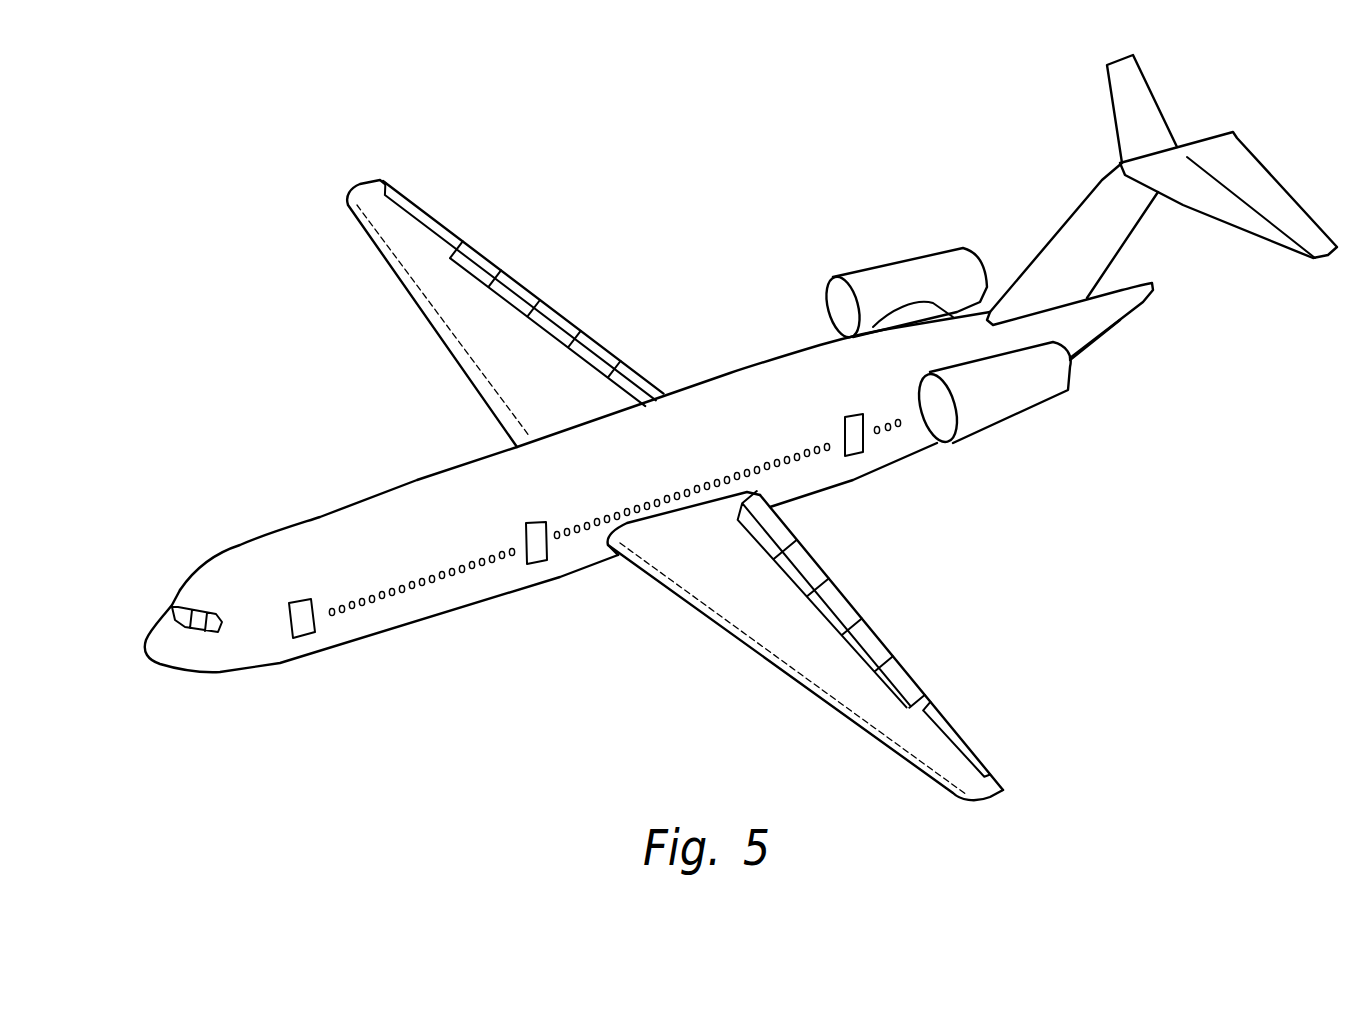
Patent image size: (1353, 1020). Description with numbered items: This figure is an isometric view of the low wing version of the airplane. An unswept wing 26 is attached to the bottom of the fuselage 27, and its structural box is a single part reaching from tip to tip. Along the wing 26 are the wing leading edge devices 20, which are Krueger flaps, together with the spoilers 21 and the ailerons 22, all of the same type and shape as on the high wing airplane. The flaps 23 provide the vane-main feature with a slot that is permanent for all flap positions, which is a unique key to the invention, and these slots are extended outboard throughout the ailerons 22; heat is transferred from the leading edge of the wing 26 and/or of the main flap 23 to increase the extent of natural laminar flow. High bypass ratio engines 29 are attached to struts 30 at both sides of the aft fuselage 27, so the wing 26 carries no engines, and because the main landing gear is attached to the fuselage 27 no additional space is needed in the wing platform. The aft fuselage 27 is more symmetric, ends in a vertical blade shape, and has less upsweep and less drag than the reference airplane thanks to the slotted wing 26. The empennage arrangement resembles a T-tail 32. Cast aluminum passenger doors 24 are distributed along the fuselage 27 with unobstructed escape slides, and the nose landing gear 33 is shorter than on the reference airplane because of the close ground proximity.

The wing leading edge devices 20 is at (805, 682).
The spoilers 21 is at (520, 300).
The ailerons 22 is at (418, 213).
The flaps 23 is at (529, 291).
The passenger doors 24 is at (862, 445).
The unswept wing 26 is at (960, 800).
The fuselage 27 is at (467, 590).
The high bypass ratio engines 29 is at (1023, 405).
The struts 30 is at (913, 317).
The T-tail 32 is at (1137, 205).
The nose landing gear 33 is at (277, 667).